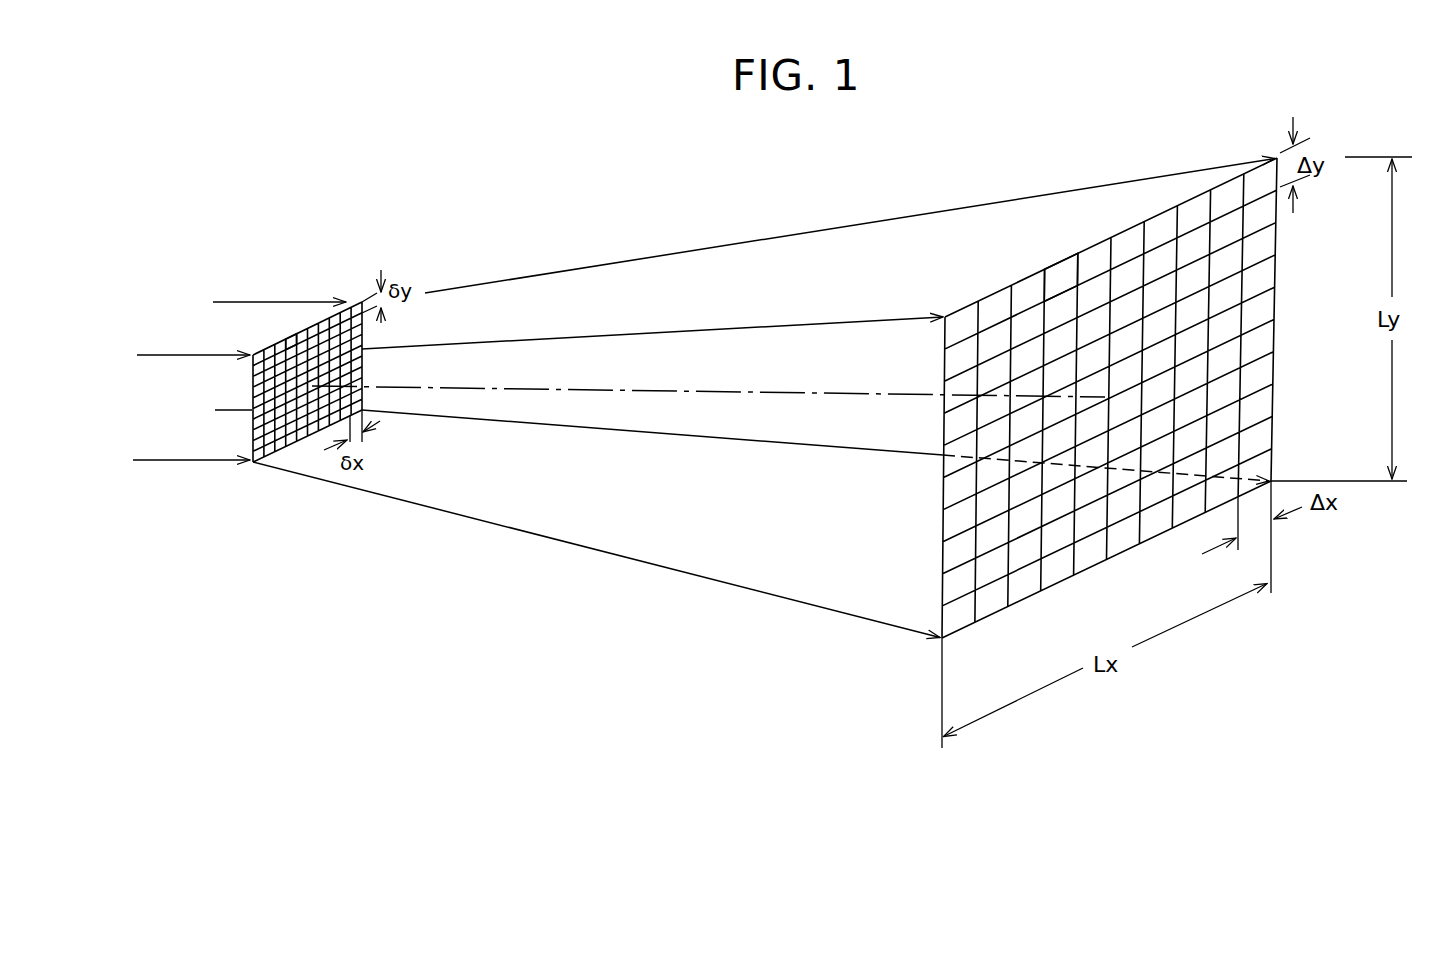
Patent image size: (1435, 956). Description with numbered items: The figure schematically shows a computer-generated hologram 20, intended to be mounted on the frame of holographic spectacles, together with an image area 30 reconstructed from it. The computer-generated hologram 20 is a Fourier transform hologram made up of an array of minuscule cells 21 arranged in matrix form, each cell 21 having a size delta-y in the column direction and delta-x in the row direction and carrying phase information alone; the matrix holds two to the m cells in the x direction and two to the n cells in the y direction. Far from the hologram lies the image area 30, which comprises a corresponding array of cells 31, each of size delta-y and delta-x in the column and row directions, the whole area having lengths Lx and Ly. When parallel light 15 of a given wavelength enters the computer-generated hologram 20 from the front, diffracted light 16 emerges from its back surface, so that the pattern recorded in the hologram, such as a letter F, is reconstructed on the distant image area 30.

The parallel light 15 is at (177, 463).
The diffracted light 16 is at (557, 542).
The computer-generated hologram 20 is at (242, 432).
The cell 21 is at (292, 343).
The image area 30 is at (921, 557).
The cell 31 is at (1063, 273).